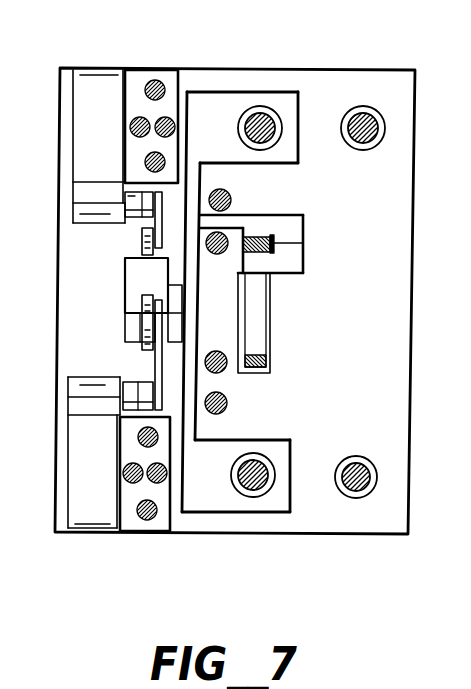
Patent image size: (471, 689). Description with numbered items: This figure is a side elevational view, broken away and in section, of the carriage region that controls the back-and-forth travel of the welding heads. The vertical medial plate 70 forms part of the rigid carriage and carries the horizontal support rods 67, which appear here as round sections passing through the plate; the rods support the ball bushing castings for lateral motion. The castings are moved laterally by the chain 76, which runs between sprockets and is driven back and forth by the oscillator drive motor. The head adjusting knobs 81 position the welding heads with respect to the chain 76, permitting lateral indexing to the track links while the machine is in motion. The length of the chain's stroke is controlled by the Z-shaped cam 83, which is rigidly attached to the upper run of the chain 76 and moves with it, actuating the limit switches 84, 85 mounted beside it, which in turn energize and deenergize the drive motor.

The vertical medial plate 70 is at (395, 328).
The horizontal support rods 67 is at (258, 115).
The chain 76 is at (262, 250).
The head adjusting knobs 81 is at (231, 197).
The Z-shaped cam 83 is at (125, 283).
The limit switch 84 is at (101, 85).
The limit switch 85 is at (92, 513).